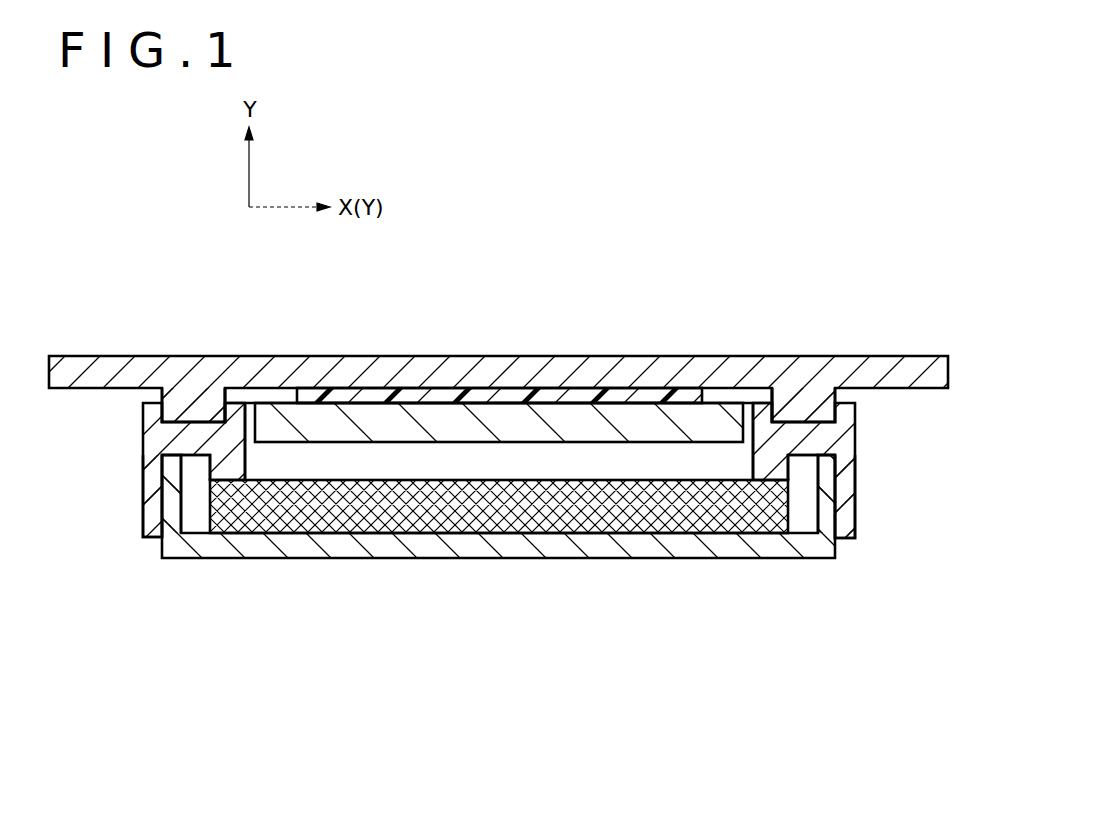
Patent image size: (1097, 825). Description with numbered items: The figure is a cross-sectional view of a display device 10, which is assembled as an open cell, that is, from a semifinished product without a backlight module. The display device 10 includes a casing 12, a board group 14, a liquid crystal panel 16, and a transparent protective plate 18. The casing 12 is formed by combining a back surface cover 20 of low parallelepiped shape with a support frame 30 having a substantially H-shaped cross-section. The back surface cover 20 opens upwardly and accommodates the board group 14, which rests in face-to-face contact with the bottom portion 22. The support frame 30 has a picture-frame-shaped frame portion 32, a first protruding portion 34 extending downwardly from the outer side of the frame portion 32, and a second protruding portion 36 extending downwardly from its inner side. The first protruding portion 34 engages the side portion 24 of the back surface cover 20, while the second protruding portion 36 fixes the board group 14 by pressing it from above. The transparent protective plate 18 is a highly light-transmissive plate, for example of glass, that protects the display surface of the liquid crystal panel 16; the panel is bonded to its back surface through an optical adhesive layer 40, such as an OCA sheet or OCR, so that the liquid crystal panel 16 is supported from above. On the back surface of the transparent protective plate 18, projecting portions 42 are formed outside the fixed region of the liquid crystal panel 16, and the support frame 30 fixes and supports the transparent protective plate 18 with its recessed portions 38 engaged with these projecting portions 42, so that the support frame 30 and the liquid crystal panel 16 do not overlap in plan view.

The display device 10 is at (132, 274).
The casing 12 is at (160, 711).
The board group 14 is at (517, 520).
The liquid crystal panel 16 is at (445, 422).
The transparent protective plate 18 is at (417, 367).
The back surface cover 20 is at (169, 569).
The bottom portion 22 is at (425, 545).
The side portion 24 is at (173, 493).
The support frame 30 is at (127, 555).
The frame portion 32 is at (173, 440).
The first protruding portion 34 is at (152, 497).
The second protruding portion 36 is at (245, 462).
The recessed portion 38 is at (185, 405).
The optical adhesive layer 40 is at (613, 393).
The projecting portion 42 is at (212, 407).